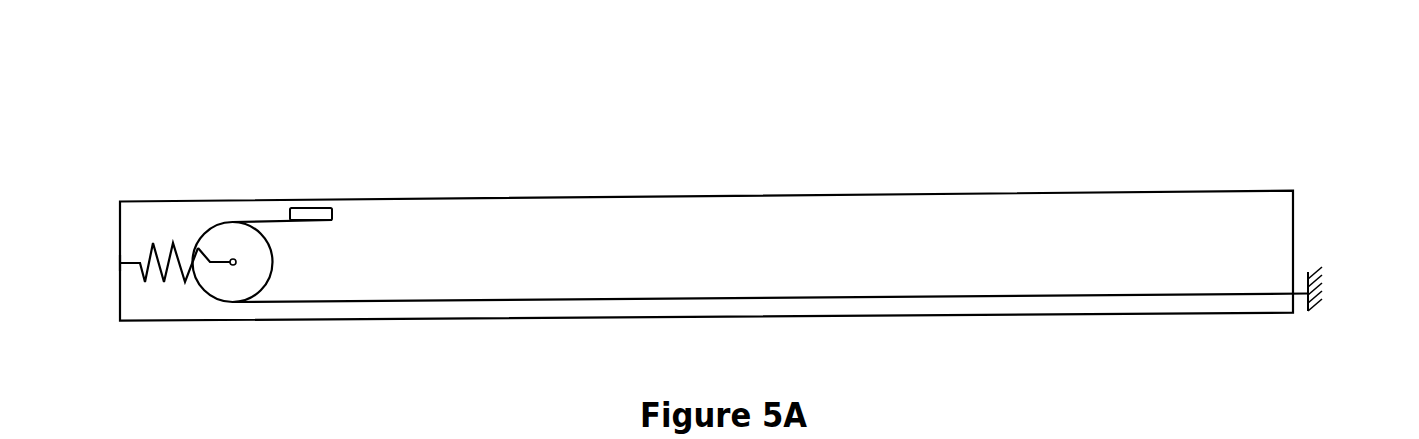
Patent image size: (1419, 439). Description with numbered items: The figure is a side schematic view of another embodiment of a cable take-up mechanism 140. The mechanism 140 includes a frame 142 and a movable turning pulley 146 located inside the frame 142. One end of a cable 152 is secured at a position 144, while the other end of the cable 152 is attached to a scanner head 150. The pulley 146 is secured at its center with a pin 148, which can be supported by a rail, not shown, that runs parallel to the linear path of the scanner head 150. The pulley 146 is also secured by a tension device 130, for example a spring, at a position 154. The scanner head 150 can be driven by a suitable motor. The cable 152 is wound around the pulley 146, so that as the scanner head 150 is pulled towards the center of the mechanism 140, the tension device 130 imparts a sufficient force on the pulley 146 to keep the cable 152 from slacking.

The cable take-up mechanism 140 is at (1006, 111).
The frame 142 is at (706, 289).
The position 144 is at (1318, 263).
The movable turning pulley 146 is at (270, 277).
The pin 148 is at (237, 260).
The scanner head 150 is at (313, 208).
The cable 152 is at (572, 300).
The position 154 is at (120, 263).
The tension device 130 is at (185, 273).